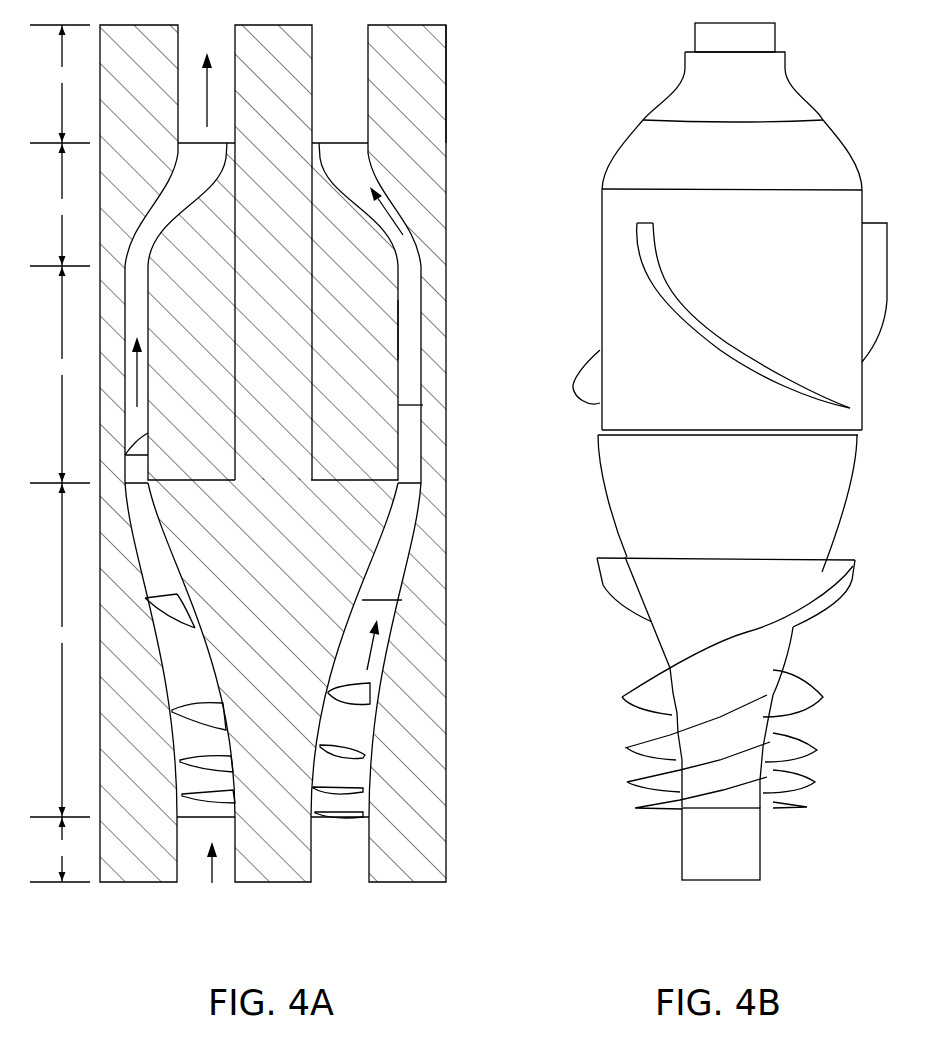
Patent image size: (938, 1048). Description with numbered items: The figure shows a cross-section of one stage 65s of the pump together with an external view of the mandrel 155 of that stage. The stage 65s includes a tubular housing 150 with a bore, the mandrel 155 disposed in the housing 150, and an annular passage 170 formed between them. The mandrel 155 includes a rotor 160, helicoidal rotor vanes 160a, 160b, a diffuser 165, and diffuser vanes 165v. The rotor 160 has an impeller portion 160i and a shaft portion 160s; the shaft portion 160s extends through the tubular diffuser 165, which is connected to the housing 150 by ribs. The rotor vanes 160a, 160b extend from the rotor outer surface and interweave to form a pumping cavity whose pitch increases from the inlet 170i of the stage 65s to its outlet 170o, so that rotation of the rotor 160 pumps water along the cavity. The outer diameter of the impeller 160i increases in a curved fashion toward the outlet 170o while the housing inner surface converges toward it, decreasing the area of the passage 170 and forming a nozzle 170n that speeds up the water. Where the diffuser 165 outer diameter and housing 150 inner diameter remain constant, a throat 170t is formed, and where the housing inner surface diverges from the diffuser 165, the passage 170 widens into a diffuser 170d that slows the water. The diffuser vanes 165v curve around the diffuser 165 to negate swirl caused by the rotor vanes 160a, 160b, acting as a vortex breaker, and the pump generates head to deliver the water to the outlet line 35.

In FIG. 4A, the housing 150 is at (447, 782).
In FIG. 4A, the rotor 160 is at (278, 882).
In FIG. 4B, the rotor 160 is at (723, 880).
In FIG. 4A, the shaft portion 160s is at (296, 287).
In FIG. 4A, the impeller portion 160i is at (290, 632).
In FIG. 4A, the helicoidal rotor vane 160a is at (335, 695).
In FIG. 4B, the helicoidal rotor vane 160a is at (610, 592).
In FIG. 4B, the helicoidal rotor vane 160b is at (623, 697).
In FIG. 4A, the diffuser 165 is at (398, 332).
In FIG. 4B, the diffuser 165 is at (600, 323).
In FIG. 4A, the diffuser vane 165v is at (398, 442).
In FIG. 4B, the diffuser vane 165v is at (575, 397).
In FIG. 4A, the annular passage 170 is at (356, 101).
In FIG. 4A, the outlet 170o is at (60, 84).
In FIG. 4A, the diffuser 170d is at (60, 204).
In FIG. 4A, the throat 170t is at (60, 374).
In FIG. 4A, the nozzle 170n is at (60, 650).
In FIG. 4A, the inlet 170i is at (60, 849).
In FIG. 4A, the stage 65s is at (468, 117).
In FIG. 4A, the outlet line 35 is at (208, 870).
In FIG. 4B, the mandrel 155 is at (612, 108).